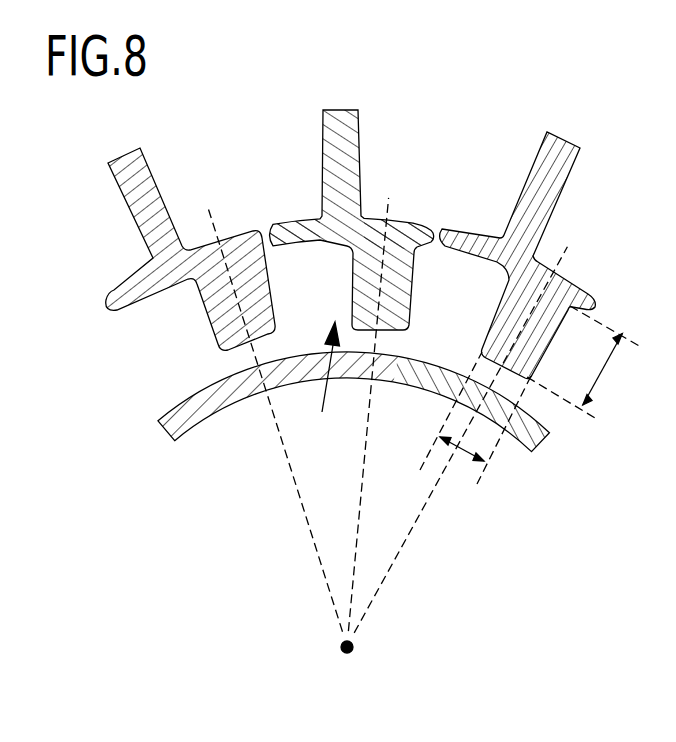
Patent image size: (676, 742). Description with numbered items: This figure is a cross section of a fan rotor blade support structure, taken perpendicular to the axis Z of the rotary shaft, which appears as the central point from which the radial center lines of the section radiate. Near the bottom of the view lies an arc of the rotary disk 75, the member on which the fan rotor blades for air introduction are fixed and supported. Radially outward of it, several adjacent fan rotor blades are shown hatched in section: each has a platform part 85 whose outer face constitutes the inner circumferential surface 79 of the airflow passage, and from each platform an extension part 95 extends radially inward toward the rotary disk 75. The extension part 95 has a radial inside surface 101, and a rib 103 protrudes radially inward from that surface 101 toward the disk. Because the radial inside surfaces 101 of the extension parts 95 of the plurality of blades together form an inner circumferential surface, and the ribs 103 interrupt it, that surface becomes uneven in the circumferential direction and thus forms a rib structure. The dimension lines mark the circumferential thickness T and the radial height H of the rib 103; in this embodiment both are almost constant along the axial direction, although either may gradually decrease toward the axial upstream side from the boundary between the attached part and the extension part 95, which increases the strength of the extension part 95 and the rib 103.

The rotary disk 75 is at (198, 412).
The inner circumferential surface of the airflow passage 79 is at (397, 217).
The platform part 85 is at (287, 225).
The extension part 95 is at (324, 387).
The radial inside surface 101 is at (302, 241).
The rib 103 is at (397, 300).
The radial height of the rib H is at (604, 370).
The thickness of the rib T is at (462, 462).
The axis of the rotary shaft Z is at (352, 650).